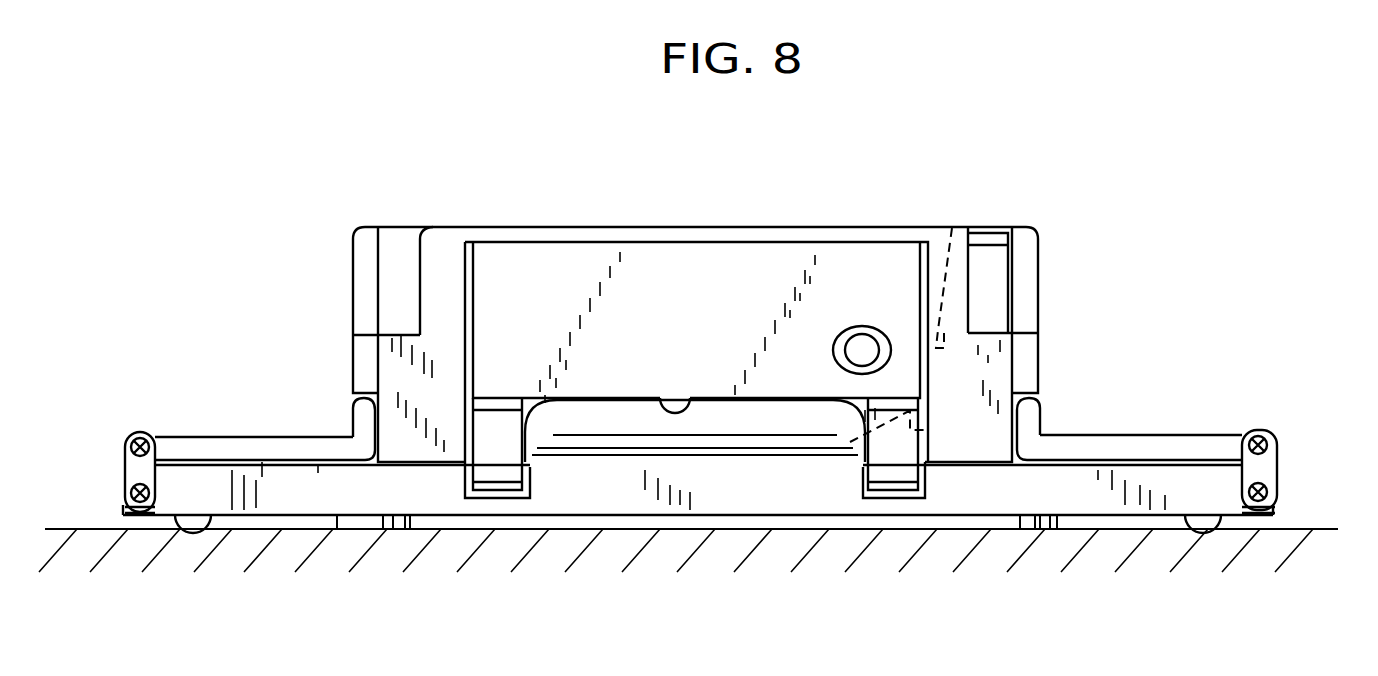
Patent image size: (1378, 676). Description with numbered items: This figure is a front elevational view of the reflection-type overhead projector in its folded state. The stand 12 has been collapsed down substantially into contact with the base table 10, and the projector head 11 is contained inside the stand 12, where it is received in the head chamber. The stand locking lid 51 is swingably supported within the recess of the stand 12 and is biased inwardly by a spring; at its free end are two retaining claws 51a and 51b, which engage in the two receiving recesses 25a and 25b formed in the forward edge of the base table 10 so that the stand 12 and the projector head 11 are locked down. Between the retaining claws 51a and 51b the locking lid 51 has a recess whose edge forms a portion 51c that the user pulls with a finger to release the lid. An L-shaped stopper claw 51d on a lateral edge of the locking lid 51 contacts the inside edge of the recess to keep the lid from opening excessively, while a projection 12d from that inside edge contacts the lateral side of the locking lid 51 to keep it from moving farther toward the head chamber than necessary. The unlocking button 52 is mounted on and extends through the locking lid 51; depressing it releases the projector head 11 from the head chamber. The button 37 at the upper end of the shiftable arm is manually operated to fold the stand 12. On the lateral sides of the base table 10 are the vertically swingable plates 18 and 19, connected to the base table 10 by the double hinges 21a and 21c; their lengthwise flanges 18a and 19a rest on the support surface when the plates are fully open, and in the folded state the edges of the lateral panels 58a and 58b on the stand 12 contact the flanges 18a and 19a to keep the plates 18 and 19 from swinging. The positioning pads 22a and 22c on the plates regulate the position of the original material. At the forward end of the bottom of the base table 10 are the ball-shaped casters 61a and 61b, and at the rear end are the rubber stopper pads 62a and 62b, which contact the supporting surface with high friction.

The base table 10 is at (728, 517).
The projector head 11 is at (613, 425).
The stand 12 is at (393, 226).
The projection 12d is at (852, 442).
The swingable plate 18 is at (197, 437).
The lengthwise flange 18a is at (353, 416).
The swingable plate 19 is at (1190, 433).
The lengthwise flange 19a is at (1040, 413).
The double hinge 21a is at (125, 470).
The double hinge 21c is at (1267, 470).
The positioning pad 22a is at (316, 462).
The positioning pad 22c is at (1078, 467).
The receiving recess 25a is at (535, 497).
The receiving recess 25b is at (928, 494).
The button 37 is at (1008, 263).
The stand locking lid 51 is at (607, 259).
The retaining claw 51a is at (490, 493).
The retaining claw 51b is at (890, 492).
The finger-pull portion 51c is at (672, 408).
The L-shaped stopper claw 51d is at (952, 228).
The unlocking button 52 is at (862, 343).
The lateral panel 58a is at (353, 362).
The lateral panel 58b is at (1040, 352).
The ball-shaped caster 61a is at (193, 530).
The ball-shaped caster 61b is at (1203, 529).
The stopper pad 62a is at (375, 530).
The stopper pad 62b is at (1025, 530).